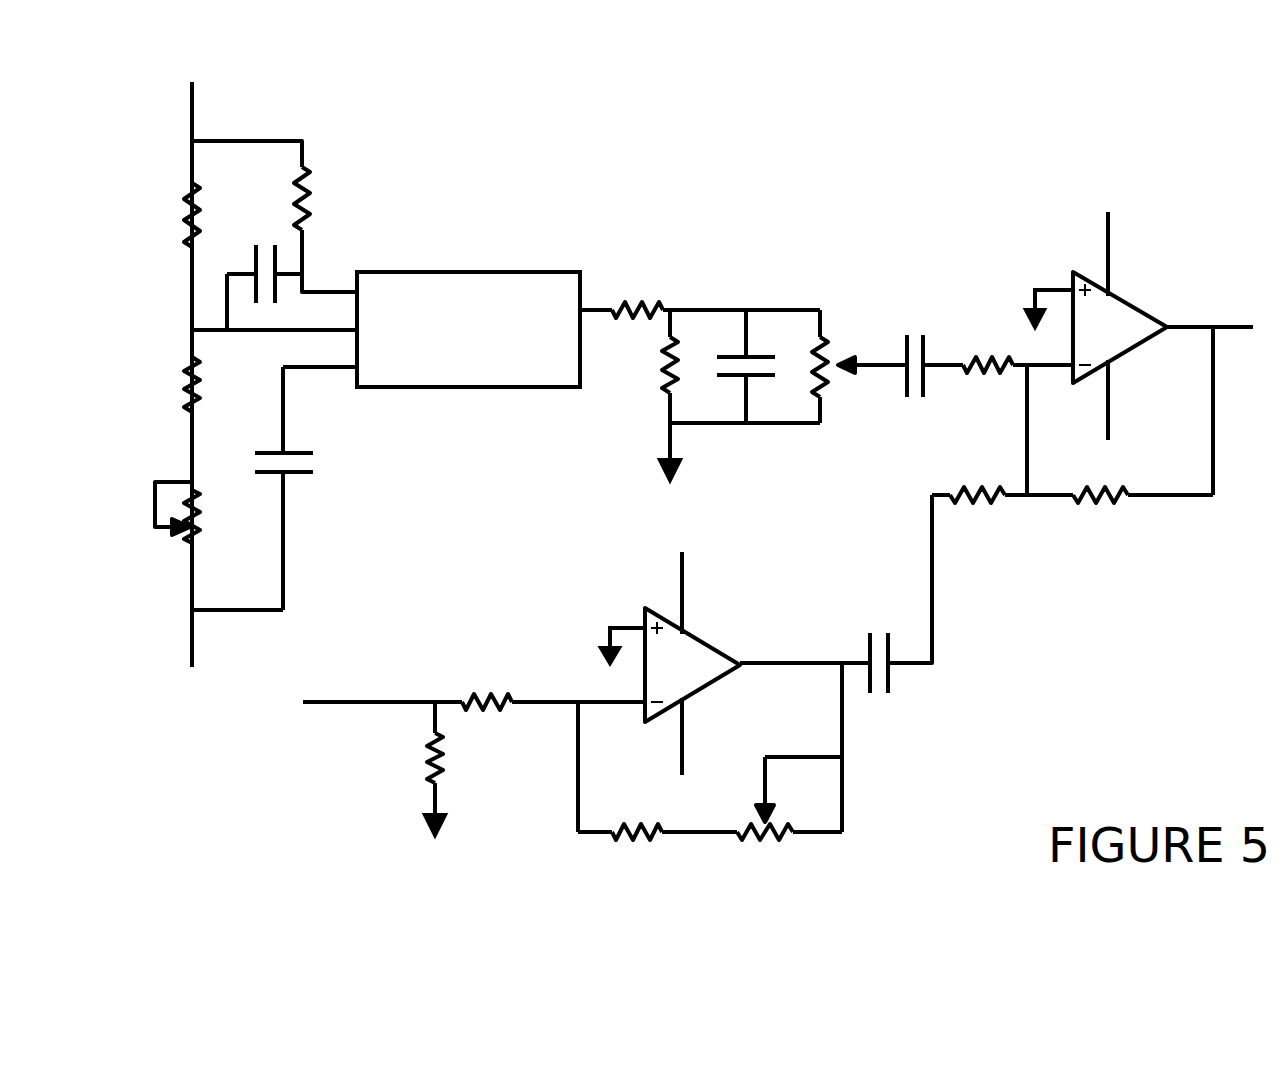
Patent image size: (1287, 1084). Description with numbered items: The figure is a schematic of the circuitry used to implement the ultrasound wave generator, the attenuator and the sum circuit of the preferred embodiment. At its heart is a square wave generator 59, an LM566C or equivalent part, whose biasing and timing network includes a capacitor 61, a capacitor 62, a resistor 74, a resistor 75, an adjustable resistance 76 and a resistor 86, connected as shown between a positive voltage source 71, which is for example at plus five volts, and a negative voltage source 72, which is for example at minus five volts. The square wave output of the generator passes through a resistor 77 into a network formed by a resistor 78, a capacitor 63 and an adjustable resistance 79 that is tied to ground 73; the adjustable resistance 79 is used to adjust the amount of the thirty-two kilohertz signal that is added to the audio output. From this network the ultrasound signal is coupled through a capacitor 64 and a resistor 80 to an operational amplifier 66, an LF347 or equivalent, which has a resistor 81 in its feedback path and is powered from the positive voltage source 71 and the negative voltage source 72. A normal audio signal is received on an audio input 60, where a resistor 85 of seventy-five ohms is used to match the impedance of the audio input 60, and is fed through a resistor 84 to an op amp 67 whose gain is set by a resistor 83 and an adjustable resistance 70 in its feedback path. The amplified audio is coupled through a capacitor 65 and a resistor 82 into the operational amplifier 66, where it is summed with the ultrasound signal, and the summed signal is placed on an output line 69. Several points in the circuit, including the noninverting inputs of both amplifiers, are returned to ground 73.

The square wave generator 59 is at (545, 390).
The audio input 60 is at (336, 697).
The capacitor 61 is at (250, 268).
The capacitor 62 is at (325, 471).
The capacitor 63 is at (711, 355).
The capacitor 64 is at (915, 407).
The capacitor 65 is at (905, 675).
The operational amplifier 66 is at (1133, 355).
The op amp 67 is at (705, 688).
The output line 69 is at (1232, 332).
The adjustable resistance 70 is at (765, 850).
The positive voltage source 71 is at (196, 114).
The negative voltage source 72 is at (198, 643).
The ground 73 is at (680, 479).
The resistor 74 is at (205, 208).
The resistor 75 is at (205, 398).
The adjustable resistance 76 is at (208, 531).
The resistor 77 is at (632, 290).
The resistor 78 is at (650, 376).
The adjustable resistance 79 is at (801, 362).
The resistor 80 is at (985, 388).
The resistor 81 is at (1098, 515).
The resistor 82 is at (972, 515).
The resistor 83 is at (635, 850).
The resistor 84 is at (482, 685).
The resistor 85 is at (455, 769).
The resistor 86 is at (320, 208).